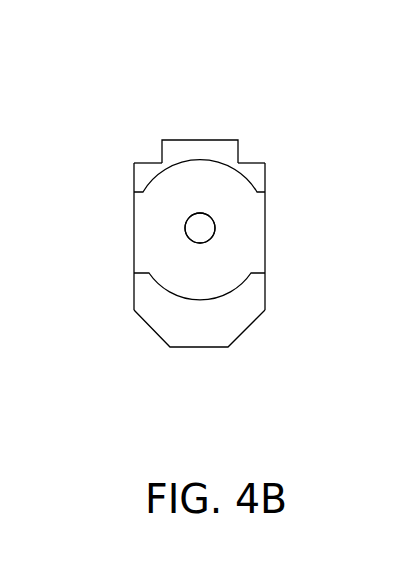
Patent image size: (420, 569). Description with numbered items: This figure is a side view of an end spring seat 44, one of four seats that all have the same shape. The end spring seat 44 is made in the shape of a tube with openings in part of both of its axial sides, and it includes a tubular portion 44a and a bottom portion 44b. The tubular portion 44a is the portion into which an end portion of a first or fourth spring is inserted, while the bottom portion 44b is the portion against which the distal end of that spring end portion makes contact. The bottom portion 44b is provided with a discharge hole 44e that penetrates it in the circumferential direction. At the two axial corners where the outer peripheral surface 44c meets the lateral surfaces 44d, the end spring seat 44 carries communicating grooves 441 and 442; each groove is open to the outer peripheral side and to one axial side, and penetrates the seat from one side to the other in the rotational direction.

The end spring seat 44 is at (275, 103).
The communicating groove 441 is at (161, 148).
The communicating groove 442 is at (238, 148).
The tubular portion 44a is at (258, 173).
The bottom portion 44b is at (199, 243).
The outer peripheral surface 44c is at (200, 139).
The lateral surfaces 44d is at (134, 228).
The discharge hole 44e is at (200, 220).